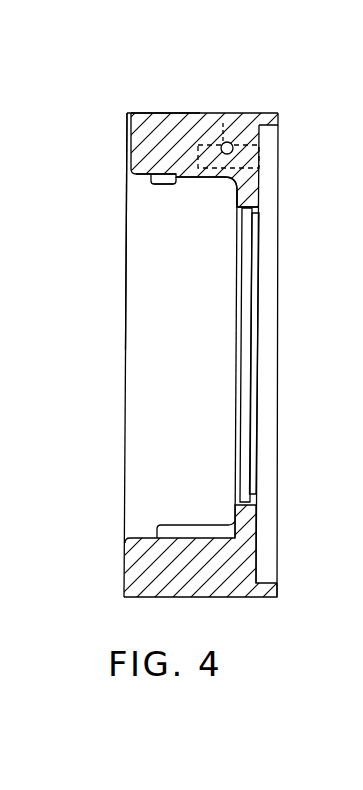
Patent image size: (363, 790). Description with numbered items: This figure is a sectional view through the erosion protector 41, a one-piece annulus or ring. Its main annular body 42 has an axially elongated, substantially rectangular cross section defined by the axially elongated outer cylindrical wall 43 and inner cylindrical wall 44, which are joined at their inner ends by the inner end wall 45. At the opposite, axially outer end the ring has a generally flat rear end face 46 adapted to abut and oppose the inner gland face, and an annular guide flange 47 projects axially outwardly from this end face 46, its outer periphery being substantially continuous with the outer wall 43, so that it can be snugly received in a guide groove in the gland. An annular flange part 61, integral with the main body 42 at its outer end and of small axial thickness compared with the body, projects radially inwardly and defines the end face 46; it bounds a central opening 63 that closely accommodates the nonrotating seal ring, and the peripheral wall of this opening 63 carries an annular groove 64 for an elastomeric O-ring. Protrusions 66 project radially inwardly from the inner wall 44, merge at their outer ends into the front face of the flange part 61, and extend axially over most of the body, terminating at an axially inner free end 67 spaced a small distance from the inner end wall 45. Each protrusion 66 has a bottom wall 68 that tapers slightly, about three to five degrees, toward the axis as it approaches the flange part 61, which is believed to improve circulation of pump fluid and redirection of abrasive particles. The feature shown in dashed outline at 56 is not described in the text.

The erosion protector 41 is at (124, 421).
The main annular body 42 is at (178, 132).
The outer cylindrical wall 43 is at (145, 113).
The inner cylindrical wall 44 is at (176, 188).
The inner end wall 45 is at (128, 150).
The rear axial end face 46 is at (253, 176).
The annular guide flange 47 is at (270, 124).
The passage 56 is at (224, 122).
The annular flange part 61 is at (250, 192).
The central opening 63 is at (252, 494).
The annular groove 64 is at (243, 497).
The protrusion 66 is at (197, 181).
The axially inner free end 67 is at (150, 178).
The bottom wall 68 is at (173, 187).